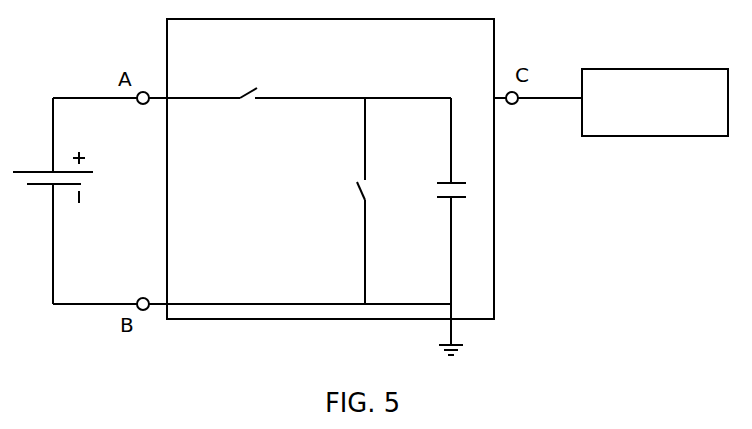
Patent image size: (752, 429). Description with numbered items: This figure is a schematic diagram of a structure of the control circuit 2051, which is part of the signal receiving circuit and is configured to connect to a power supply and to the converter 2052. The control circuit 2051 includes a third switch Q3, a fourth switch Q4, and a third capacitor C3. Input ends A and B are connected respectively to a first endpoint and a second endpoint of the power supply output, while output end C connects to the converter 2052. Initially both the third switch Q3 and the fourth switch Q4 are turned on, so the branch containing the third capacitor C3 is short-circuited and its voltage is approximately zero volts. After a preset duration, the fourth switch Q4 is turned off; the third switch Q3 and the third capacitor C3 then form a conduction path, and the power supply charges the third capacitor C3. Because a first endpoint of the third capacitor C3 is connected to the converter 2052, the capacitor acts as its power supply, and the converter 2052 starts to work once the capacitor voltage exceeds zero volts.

The control circuit 2051 is at (330, 169).
The converter 2052 is at (655, 102).
The third switch Q3 is at (300, 109).
The fourth switch Q4 is at (383, 201).
The third capacitor C3 is at (435, 208).